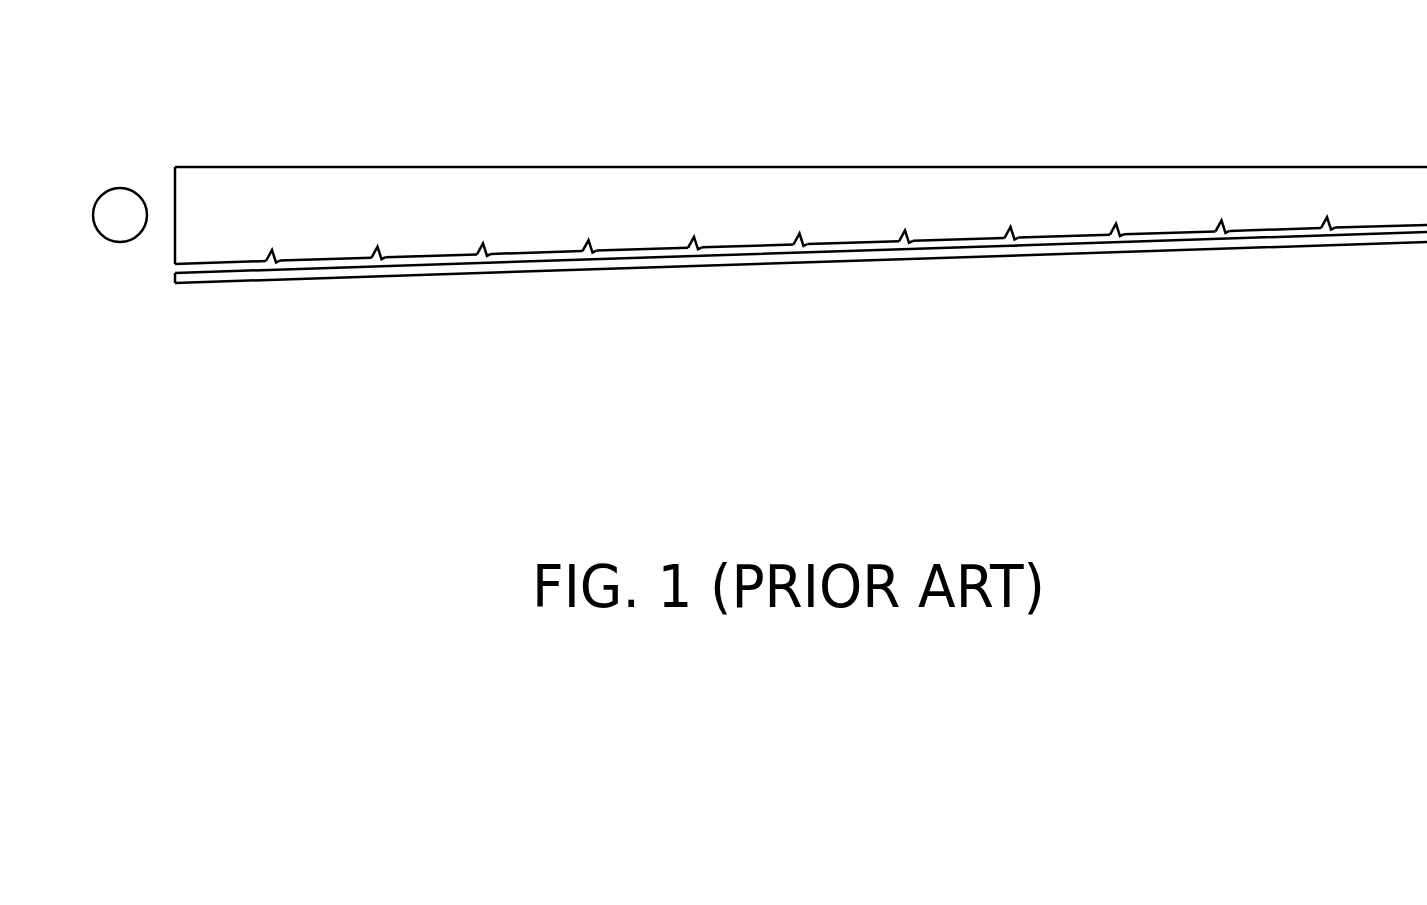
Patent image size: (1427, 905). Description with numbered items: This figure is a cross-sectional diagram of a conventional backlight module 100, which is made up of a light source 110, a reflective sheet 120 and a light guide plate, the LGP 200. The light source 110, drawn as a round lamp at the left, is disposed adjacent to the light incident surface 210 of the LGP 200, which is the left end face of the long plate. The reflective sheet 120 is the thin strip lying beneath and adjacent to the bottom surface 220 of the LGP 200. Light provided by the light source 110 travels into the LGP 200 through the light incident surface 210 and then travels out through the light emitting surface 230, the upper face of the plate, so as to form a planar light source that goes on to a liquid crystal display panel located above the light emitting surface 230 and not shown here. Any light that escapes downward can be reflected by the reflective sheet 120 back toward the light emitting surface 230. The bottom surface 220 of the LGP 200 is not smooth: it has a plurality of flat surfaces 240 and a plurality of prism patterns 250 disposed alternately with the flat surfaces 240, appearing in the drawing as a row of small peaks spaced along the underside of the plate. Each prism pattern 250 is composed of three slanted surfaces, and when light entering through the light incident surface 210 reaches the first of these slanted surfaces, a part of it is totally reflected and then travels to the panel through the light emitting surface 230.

The backlight module 100 is at (1215, 465).
The light source 110 is at (118, 187).
The reflective sheet 120 is at (277, 283).
The LGP 200 is at (777, 232).
The light incident surface 210 is at (175, 238).
The bottom surface 220 is at (801, 331).
The light emitting surface 230 is at (583, 167).
The flat surfaces 240 is at (525, 257).
The prism patterns 250 is at (378, 252).